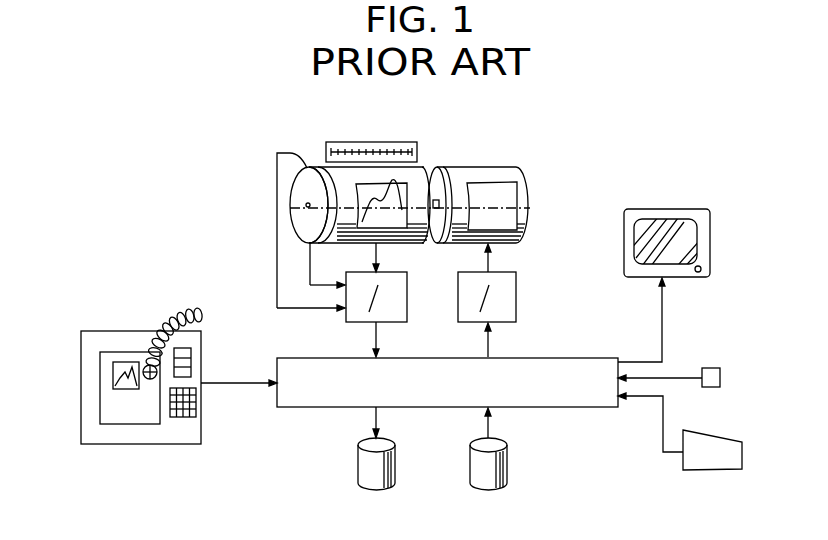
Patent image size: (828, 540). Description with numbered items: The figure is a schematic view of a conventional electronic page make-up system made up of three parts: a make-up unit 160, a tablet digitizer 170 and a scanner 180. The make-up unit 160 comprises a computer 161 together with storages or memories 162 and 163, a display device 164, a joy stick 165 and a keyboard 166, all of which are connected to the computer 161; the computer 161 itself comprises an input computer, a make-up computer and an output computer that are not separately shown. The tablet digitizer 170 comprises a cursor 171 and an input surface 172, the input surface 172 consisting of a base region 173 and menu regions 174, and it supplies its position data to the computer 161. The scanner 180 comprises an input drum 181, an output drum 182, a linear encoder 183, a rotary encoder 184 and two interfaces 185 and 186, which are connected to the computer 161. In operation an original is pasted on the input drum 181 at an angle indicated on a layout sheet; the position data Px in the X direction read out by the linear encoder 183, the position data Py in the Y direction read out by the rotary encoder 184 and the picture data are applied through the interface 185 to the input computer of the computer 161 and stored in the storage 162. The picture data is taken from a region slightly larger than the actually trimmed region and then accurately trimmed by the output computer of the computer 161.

The make-up unit 160 is at (618, 340).
The computer 161 is at (297, 408).
The storage 162 is at (358, 467).
The storage 163 is at (508, 473).
The display device 164 is at (687, 209).
The joy stick 165 is at (710, 368).
The keyboard 166 is at (683, 464).
The tablet digitizer 170 is at (166, 293).
The cursor 171 is at (150, 379).
The input surface 172 is at (98, 331).
The base region 173 is at (110, 424).
The menu regions 174 is at (190, 353).
The scanner 180 is at (598, 210).
The input drum 181 is at (422, 167).
The output drum 182 is at (508, 167).
The linear encoder 183 is at (366, 142).
The rotary encoder 184 is at (288, 153).
The interface 185 is at (407, 284).
The interface 186 is at (516, 285).